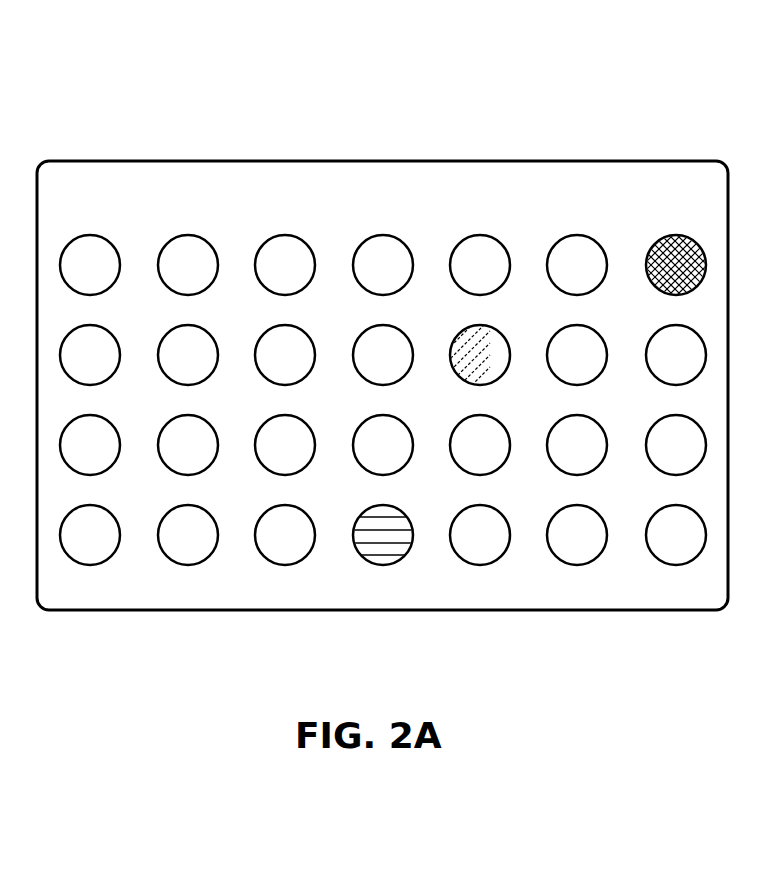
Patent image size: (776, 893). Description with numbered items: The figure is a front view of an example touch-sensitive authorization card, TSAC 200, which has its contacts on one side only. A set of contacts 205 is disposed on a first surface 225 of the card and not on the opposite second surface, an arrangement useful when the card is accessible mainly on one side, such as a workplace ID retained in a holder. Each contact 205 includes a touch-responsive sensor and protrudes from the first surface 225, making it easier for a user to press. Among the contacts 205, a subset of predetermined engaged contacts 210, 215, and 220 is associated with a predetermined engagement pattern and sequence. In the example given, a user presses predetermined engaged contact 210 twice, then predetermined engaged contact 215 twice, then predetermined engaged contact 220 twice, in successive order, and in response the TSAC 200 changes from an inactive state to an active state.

The touch-sensitive authorization card 200 is at (157, 95).
The contacts 205 is at (165, 196).
The predetermined engaged contact 210 is at (405, 514).
The predetermined engaged contact 215 is at (504, 333).
The predetermined engaged contact 220 is at (652, 244).
The first surface 225 is at (403, 194).